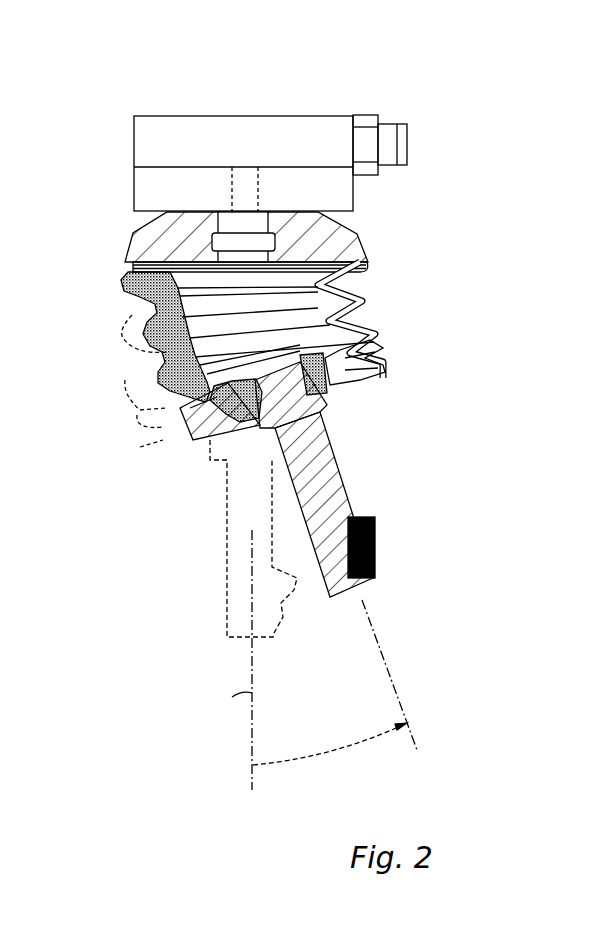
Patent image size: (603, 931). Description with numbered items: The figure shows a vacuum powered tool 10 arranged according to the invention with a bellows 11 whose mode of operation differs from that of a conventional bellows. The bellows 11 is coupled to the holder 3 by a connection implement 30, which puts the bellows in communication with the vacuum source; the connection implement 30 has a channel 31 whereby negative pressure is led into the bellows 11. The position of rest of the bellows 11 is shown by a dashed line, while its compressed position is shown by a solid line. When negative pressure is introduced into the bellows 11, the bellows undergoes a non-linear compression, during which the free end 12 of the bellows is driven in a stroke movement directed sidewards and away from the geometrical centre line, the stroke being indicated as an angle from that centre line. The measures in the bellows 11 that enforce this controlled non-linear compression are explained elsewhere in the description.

The vacuum powered tool 10 is at (468, 92).
The holder 3 is at (355, 192).
The connection implement 30 is at (208, 212).
The channel 31 is at (212, 212).
The bellows 11 is at (367, 262).
The free end 12 is at (152, 455).